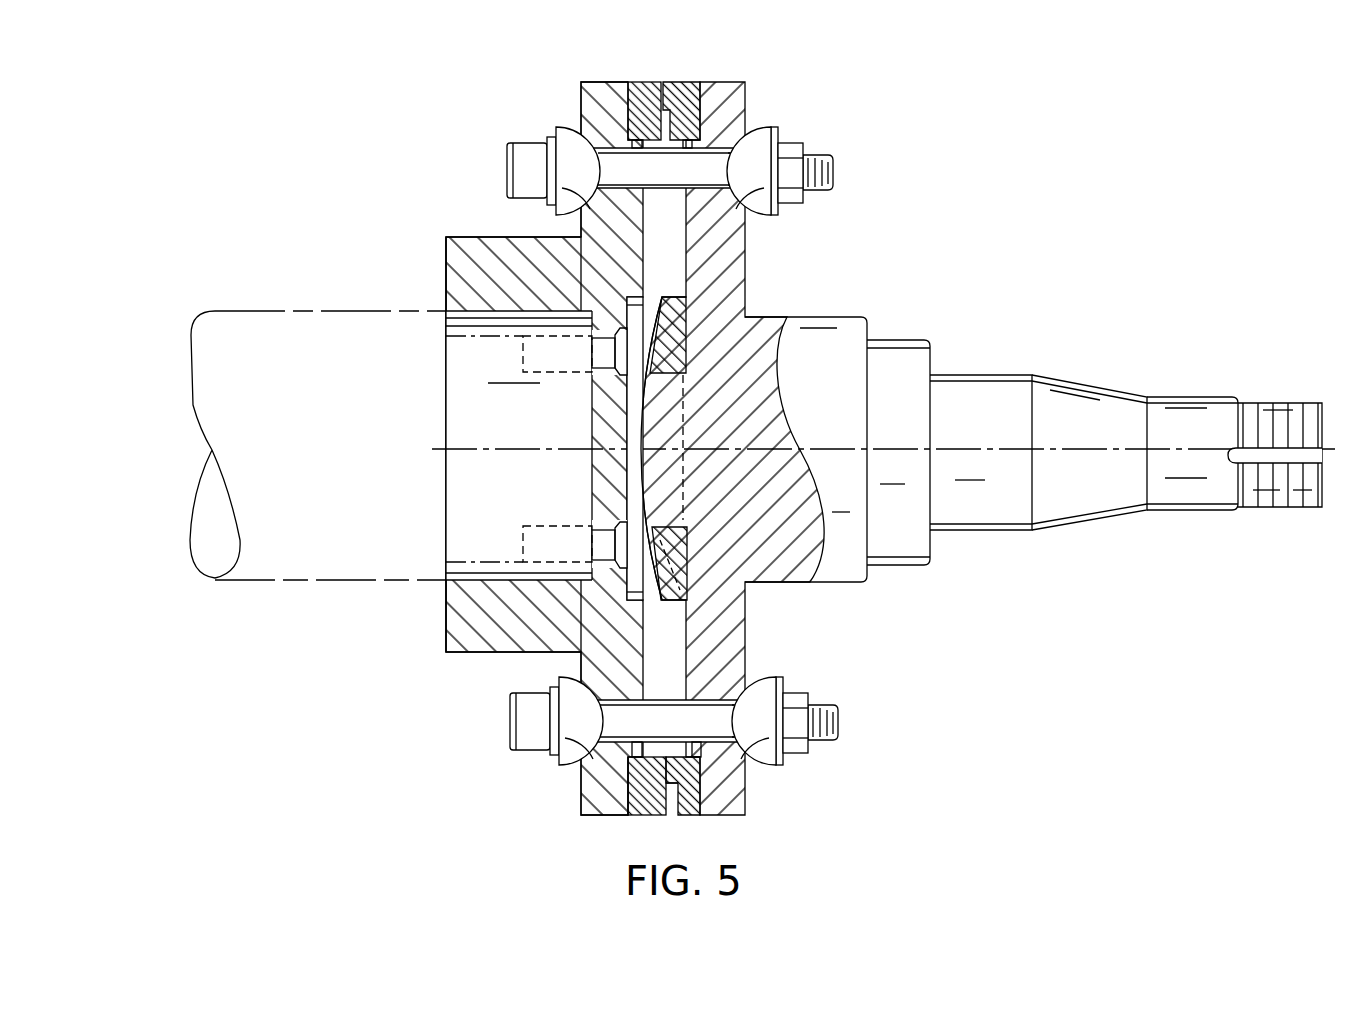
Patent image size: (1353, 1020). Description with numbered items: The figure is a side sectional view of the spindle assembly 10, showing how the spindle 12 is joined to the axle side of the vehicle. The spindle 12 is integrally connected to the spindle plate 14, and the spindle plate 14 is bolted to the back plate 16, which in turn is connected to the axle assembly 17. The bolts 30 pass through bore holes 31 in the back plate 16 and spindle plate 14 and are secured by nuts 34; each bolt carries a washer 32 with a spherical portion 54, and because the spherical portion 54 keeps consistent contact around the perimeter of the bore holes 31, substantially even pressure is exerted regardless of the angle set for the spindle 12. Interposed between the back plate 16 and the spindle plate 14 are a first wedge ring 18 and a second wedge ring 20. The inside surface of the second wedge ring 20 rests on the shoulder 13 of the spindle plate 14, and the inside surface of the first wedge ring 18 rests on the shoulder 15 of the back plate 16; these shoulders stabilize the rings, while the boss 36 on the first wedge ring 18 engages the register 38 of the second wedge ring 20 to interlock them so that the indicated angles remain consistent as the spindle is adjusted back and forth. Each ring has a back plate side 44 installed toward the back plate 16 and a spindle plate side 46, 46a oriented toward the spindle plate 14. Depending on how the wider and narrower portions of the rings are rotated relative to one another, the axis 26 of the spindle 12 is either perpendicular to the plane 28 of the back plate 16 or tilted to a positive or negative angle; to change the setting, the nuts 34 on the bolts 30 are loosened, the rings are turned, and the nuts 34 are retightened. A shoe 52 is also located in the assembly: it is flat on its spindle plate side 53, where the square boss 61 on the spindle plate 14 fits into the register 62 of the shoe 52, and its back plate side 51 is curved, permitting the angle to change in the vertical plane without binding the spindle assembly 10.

The spindle assembly 10 is at (948, 96).
The spindle 12 is at (1078, 390).
The shoulder 13 is at (691, 148).
The spindle plate 14 is at (735, 88).
The shoulder 15 is at (633, 148).
The back plate 16 is at (597, 84).
The axle assembly 17 is at (471, 648).
The first wedge ring 18 is at (636, 76).
The second wedge ring 20 is at (687, 76).
The axis 26 is at (1073, 457).
The plane 28 is at (662, 803).
The bolt 30 is at (840, 171).
The bore hole 31 is at (775, 150).
The washer 32 is at (768, 672).
The nut 34 is at (797, 200).
The boss 36 is at (705, 765).
The register 38 is at (660, 773).
The back plate side 44 is at (615, 103).
The spindle plate side 46 is at (740, 802).
The spindle plate side 46a is at (720, 122).
The back plate side 51 is at (652, 346).
The shoe 52 is at (636, 370).
The spindle plate side 53 is at (690, 320).
The spherical portion 54 is at (766, 698).
The square boss 61 is at (662, 476).
The register 62 is at (660, 525).